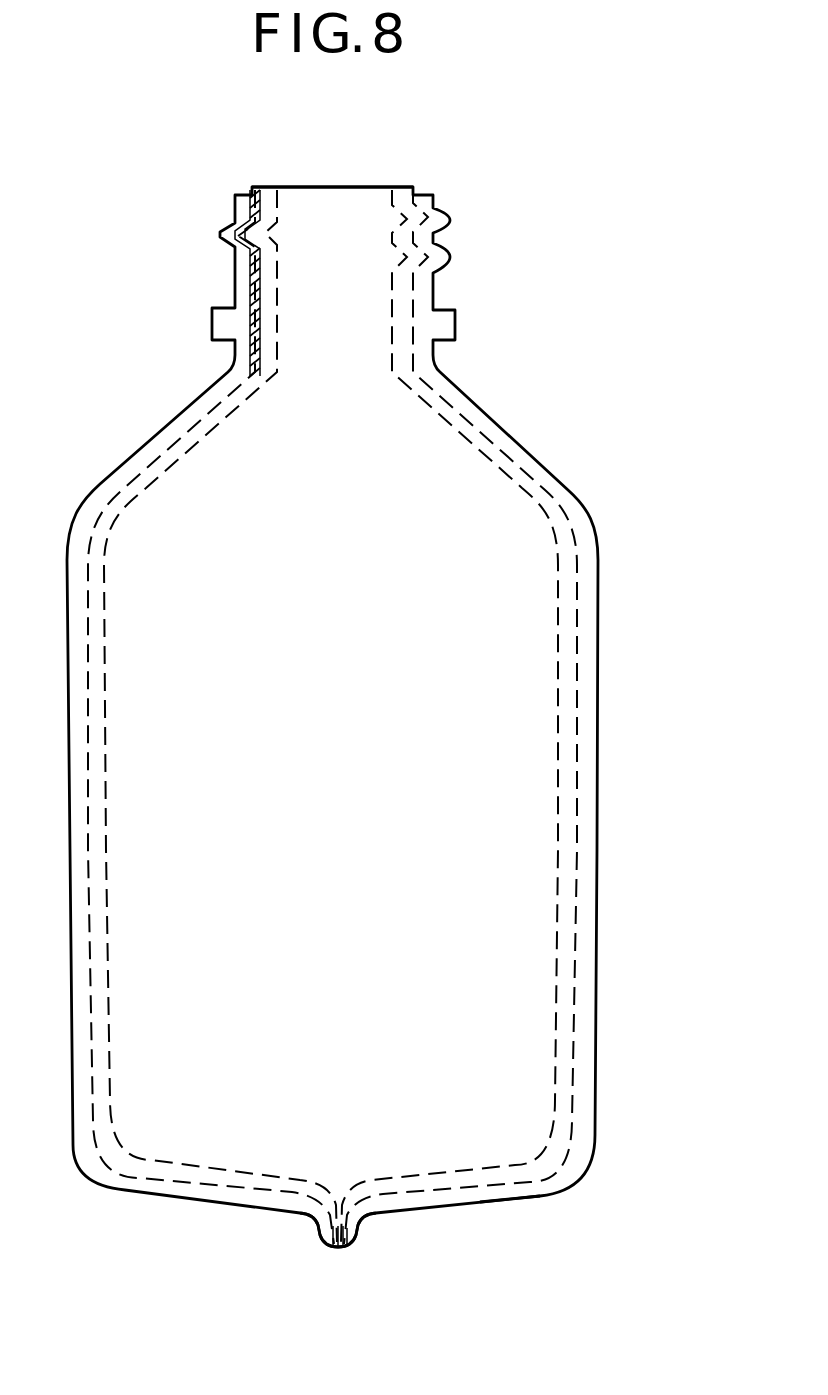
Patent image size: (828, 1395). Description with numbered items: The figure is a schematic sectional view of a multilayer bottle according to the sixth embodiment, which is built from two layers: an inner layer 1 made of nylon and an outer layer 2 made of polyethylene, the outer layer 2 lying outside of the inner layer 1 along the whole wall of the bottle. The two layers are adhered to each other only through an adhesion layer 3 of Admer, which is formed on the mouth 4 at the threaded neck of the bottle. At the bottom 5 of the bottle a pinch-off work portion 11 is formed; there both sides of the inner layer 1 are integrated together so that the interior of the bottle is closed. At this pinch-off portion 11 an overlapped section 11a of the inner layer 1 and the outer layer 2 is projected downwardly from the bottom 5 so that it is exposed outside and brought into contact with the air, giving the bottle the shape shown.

The inner layer 1 is at (567, 560).
The outer layer 2 is at (513, 453).
The adhesion layer 3 is at (252, 282).
The mouth 4 is at (338, 205).
The bottom 5 is at (480, 1205).
The pinch-off portion 11 is at (313, 1226).
The overlapped section 11a is at (350, 1248).